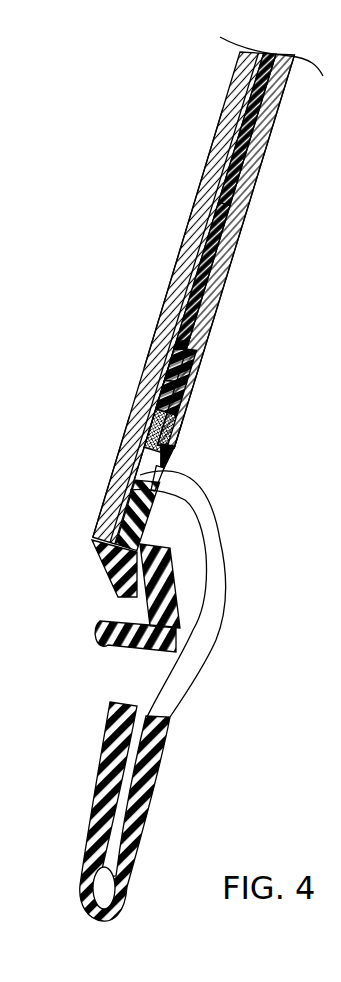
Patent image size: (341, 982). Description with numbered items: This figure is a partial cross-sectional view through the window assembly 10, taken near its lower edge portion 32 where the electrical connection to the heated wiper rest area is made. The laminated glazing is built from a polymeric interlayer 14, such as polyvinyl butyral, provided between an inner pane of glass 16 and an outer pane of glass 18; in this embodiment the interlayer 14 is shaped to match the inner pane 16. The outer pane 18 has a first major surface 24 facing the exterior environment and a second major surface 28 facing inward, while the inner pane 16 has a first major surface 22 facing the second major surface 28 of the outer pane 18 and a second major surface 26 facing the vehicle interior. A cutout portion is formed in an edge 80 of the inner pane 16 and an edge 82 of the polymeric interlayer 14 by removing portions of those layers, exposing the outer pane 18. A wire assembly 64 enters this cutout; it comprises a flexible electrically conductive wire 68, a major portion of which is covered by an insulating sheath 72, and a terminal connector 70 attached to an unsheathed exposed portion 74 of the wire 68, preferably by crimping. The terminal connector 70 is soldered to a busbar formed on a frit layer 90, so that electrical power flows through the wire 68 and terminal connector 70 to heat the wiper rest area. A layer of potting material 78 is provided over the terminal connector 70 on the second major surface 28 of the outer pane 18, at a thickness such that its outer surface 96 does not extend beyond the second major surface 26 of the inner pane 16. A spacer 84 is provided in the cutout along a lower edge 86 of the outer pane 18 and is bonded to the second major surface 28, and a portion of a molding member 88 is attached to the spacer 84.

The window assembly 10 is at (91, 85).
The polymeric interlayer 14 is at (217, 227).
The inner pane of glass 16 is at (272, 138).
The outer pane of glass 18 is at (207, 162).
The first major surface of the inner pane 22 is at (265, 79).
The first major surface of the outer pane 24 is at (243, 77).
The second major surface of the inner pane 26 is at (282, 106).
The second major surface of the outer pane 28 is at (232, 126).
The lower edge portion 32 is at (165, 287).
The wire assembly 64 is at (190, 495).
The electrically conductive wire 68 is at (168, 452).
The terminal connector 70 is at (175, 430).
The insulating sheath 72 is at (203, 605).
The exposed portion of the conductive wire 74 is at (146, 441).
The potting material 78 is at (187, 385).
The edge of the inner pane 80 is at (183, 361).
The edge of the polymeric interlayer 82 is at (177, 341).
The spacer 84 is at (180, 520).
The lower edge of the outer pane 86 is at (92, 540).
The molding member 88 is at (120, 650).
The frit layer 90 is at (112, 478).
The outer surface of the potting material 96 is at (180, 407).